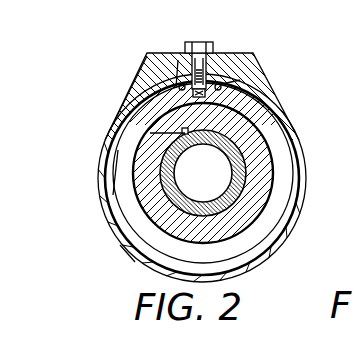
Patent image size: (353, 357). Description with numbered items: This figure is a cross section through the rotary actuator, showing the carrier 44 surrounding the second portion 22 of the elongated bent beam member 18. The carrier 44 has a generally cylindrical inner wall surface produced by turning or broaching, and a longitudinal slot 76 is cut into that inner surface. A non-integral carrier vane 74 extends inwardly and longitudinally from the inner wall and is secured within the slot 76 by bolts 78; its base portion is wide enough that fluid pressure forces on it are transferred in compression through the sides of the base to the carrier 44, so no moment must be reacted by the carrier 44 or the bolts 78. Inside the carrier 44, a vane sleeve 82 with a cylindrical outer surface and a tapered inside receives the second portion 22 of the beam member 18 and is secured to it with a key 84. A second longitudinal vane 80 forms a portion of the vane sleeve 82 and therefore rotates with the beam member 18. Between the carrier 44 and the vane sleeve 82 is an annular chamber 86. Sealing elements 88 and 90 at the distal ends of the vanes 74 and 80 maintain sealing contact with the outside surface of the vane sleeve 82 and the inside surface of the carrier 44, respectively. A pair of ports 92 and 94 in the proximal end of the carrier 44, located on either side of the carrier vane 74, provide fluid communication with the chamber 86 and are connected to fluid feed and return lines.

The elongated bent beam member 18 is at (244, 174).
The second portion 22 is at (208, 183).
The carrier 44 is at (284, 108).
The carrier vane 74 is at (222, 91).
The longitudinal slot 76 is at (218, 78).
The bolts 78 is at (204, 42).
The second longitudinal vane 80 is at (160, 91).
The vane sleeve 82 is at (129, 163).
The key 84 is at (185, 131).
The annular chamber 86 is at (133, 226).
The sealing element 88 is at (208, 106).
The sealing element 90 is at (153, 73).
The port 92 is at (240, 84).
The port 94 is at (180, 80).